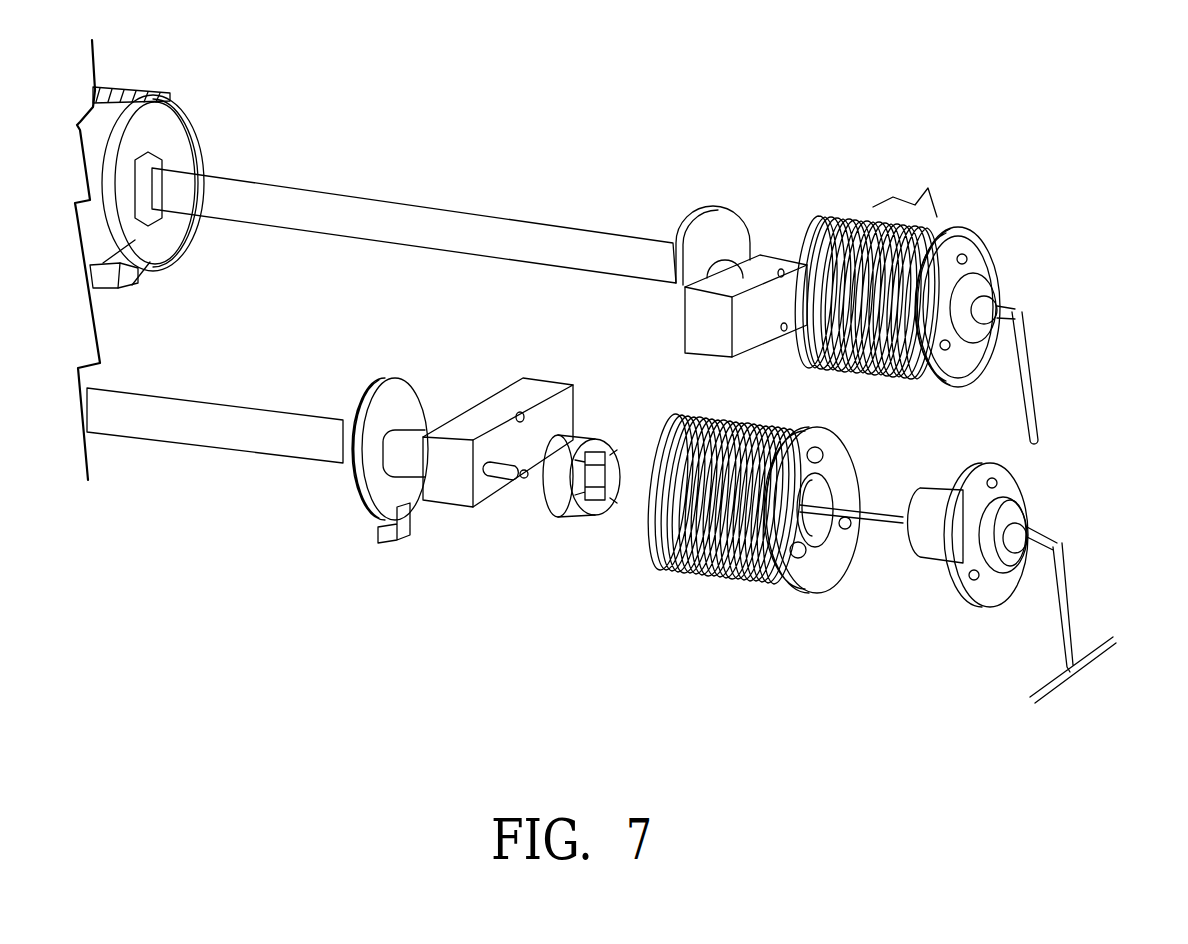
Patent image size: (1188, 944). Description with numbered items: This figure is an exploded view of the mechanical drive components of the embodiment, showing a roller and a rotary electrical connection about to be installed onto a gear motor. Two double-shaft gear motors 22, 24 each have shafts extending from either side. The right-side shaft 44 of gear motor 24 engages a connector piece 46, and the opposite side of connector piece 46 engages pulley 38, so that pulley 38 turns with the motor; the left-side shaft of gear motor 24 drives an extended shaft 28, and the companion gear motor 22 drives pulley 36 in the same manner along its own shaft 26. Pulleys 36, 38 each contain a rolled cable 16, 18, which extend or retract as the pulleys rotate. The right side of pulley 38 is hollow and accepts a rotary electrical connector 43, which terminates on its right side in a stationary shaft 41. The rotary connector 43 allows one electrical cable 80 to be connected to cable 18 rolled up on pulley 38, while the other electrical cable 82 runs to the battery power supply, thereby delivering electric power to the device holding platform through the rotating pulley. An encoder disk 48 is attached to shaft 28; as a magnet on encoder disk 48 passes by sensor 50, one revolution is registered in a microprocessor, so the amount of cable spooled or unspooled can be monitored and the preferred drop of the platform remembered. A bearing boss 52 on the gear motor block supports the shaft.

The cable 16 is at (977, 285).
The cable 18 is at (724, 473).
The gear motor 22 is at (777, 235).
The gear motor 24 is at (478, 571).
The upper shaft 26 is at (414, 195).
The extended shaft 28 is at (215, 391).
The pulley 36 is at (981, 265).
The pulley 38 is at (773, 569).
The stationary shaft 41 is at (1040, 522).
The rotary electrical connector 43 is at (952, 485).
The right-side shaft 44 is at (492, 568).
The connector piece 46 is at (581, 561).
The encoder disk 48 is at (330, 520).
The sensor 50 is at (350, 623).
The bearing boss 52 is at (736, 181).
The electrical cable 80 is at (851, 616).
The electrical cable 82 is at (1095, 615).